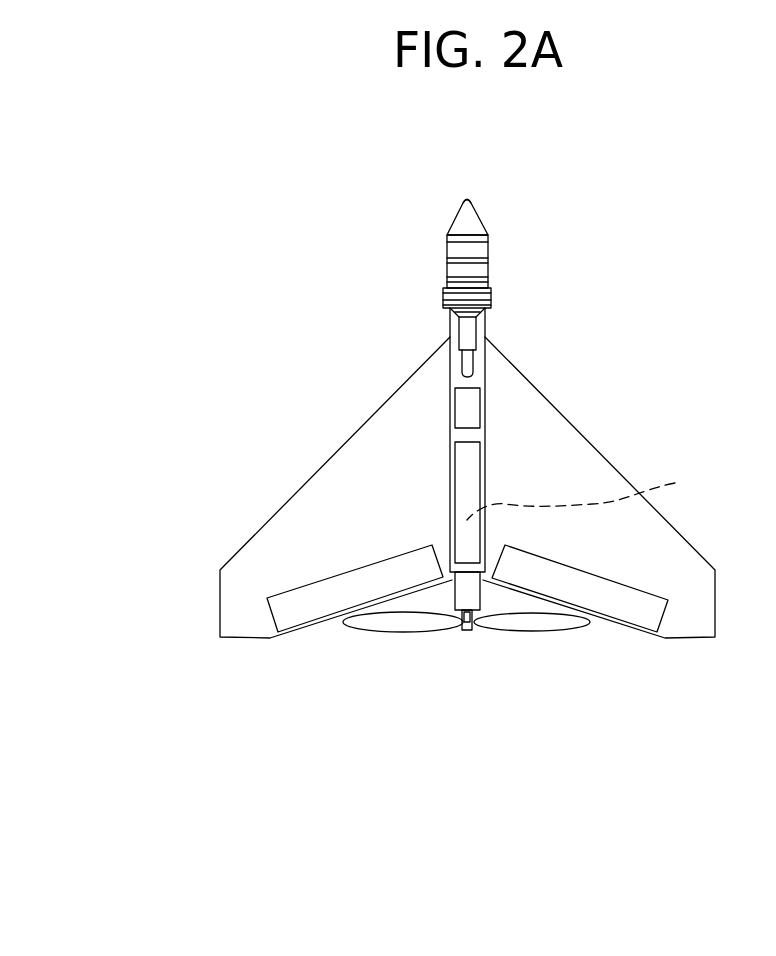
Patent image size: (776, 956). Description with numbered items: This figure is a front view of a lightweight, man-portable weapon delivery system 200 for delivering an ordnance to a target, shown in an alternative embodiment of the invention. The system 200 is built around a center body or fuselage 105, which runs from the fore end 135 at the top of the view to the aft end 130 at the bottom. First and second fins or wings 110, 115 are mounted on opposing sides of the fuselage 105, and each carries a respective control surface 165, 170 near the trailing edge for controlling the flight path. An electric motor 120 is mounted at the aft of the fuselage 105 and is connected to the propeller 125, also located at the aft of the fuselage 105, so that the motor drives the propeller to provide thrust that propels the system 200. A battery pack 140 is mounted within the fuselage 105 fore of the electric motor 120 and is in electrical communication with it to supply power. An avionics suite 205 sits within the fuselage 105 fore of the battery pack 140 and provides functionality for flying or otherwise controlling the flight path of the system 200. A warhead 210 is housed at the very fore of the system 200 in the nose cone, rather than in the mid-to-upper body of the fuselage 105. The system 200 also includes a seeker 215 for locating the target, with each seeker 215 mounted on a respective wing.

The fuselage 105 is at (450, 328).
The first wing 110 is at (353, 433).
The second wing 115 is at (552, 407).
The electric motor 120 is at (472, 593).
The propeller 125 is at (402, 632).
The aft end 130 is at (463, 673).
The fore end 135 is at (487, 163).
The battery pack 140 is at (468, 470).
The control surface 165 is at (360, 566).
The control surface 170 is at (625, 582).
The weapon delivery system 200 is at (356, 212).
The avionics suite 205 is at (472, 405).
The warhead 210 is at (488, 272).
The seeker 215 is at (591, 492).